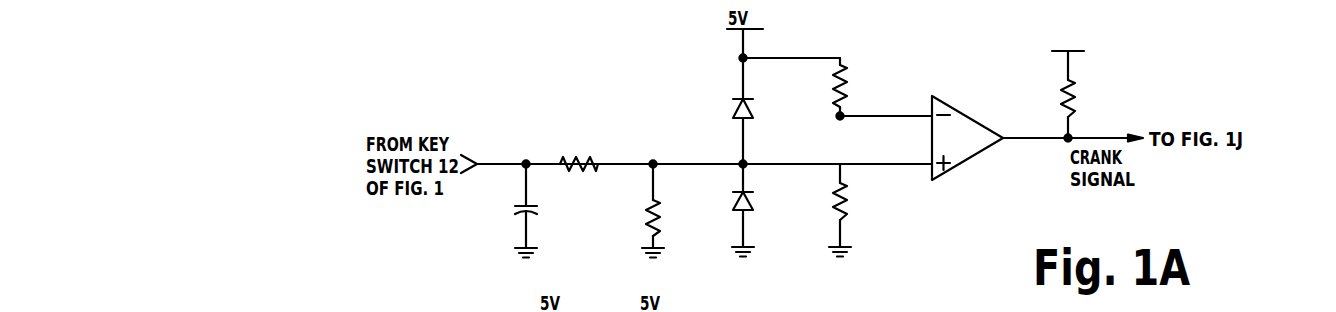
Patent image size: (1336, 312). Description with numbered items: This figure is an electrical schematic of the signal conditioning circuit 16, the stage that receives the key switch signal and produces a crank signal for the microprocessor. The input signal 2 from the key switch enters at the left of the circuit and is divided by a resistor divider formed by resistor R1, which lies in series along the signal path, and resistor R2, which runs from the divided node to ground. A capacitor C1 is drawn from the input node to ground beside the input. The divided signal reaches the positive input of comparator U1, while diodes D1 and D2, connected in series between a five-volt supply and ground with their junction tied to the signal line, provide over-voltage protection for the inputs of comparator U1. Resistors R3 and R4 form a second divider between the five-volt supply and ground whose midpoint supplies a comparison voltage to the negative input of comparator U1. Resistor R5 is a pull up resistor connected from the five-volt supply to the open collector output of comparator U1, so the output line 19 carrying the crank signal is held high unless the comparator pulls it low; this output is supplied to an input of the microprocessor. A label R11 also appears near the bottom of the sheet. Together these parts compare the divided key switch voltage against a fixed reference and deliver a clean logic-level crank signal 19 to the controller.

The signal 2 is at (510, 162).
The signal conditioning circuit 16 is at (898, 200).
The crank signal output line 19 is at (1105, 137).
The capacitor C1 is at (534, 212).
The resistor R1 is at (592, 157).
The resistor R2 is at (658, 206).
The resistor R3 is at (845, 83).
The resistor R4 is at (845, 203).
The pull up resistor R5 is at (1074, 91).
The resistor R11 is at (808, 301).
The diode D1 is at (752, 104).
The diode D2 is at (752, 204).
The comparator U1 is at (968, 112).